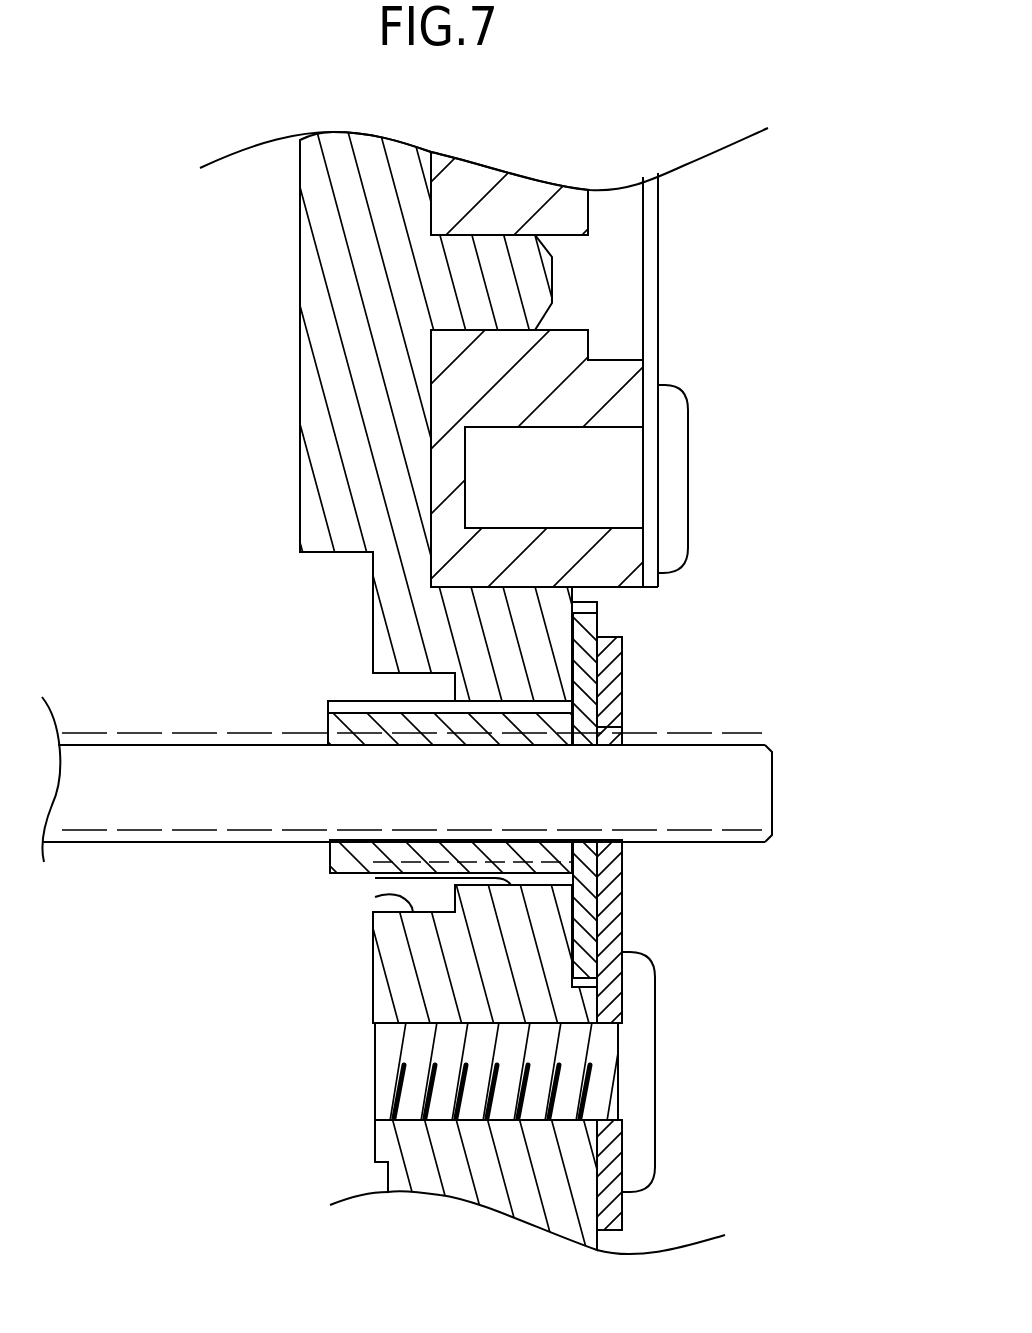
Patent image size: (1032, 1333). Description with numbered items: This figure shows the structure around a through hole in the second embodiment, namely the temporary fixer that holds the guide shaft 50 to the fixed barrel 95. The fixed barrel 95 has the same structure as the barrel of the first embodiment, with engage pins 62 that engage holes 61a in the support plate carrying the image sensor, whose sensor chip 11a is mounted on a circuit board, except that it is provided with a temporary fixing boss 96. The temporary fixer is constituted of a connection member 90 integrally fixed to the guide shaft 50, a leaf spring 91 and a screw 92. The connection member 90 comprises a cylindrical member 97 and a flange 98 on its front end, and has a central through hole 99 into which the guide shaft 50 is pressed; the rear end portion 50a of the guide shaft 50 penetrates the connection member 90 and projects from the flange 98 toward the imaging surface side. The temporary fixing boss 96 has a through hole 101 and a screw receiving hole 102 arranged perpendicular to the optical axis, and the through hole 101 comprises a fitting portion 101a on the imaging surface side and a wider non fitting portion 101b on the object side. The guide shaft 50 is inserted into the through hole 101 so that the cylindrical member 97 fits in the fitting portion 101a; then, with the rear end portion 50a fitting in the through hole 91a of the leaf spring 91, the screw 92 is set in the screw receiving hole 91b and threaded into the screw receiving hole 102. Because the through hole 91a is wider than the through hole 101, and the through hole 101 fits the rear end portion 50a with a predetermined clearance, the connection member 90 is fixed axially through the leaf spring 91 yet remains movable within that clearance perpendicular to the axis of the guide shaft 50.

The fixed barrel 95 is at (298, 277).
The holes 61a is at (567, 247).
The engage pins 62 is at (508, 285).
The sensor chip 11a is at (652, 268).
The flange 98 is at (600, 623).
The leaf spring 91 is at (730, 944).
The through hole 91a is at (610, 728).
The screw receiving hole 91b is at (600, 1018).
The screw 92 is at (637, 1078).
The connection member 90 is at (347, 697).
The through hole 99 is at (356, 752).
The cylindrical member 97 is at (405, 858).
The guide shaft 50 is at (477, 722).
The rear end portion 50a is at (758, 792).
The temporary fixing boss 96 is at (375, 980).
The through hole 101 is at (337, 938).
The fitting portion 101a is at (377, 876).
The non fitting portion 101b is at (377, 907).
The screw receiving hole 102 is at (450, 1118).